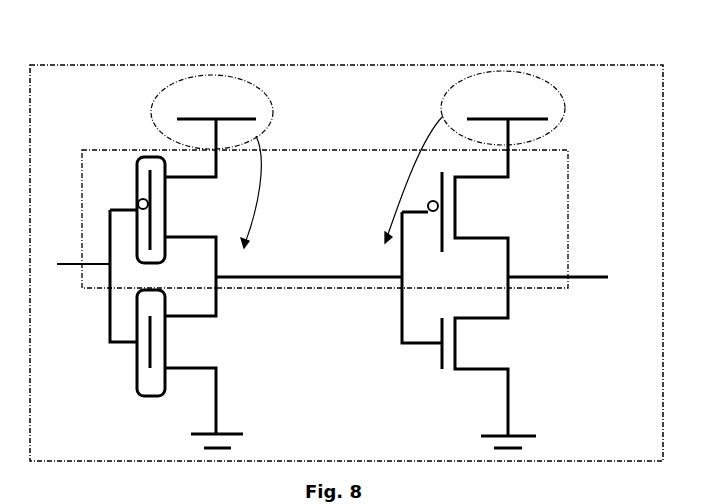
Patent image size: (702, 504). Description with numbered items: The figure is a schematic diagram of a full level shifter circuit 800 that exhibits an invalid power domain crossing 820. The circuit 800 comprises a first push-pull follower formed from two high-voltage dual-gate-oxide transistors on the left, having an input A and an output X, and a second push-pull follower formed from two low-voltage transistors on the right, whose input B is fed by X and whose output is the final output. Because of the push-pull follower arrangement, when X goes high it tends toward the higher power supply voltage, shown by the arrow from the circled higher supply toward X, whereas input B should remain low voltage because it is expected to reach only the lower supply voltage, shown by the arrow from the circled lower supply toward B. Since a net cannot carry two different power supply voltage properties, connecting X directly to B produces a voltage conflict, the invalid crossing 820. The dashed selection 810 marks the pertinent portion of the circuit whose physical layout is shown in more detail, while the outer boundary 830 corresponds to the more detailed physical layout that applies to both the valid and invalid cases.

The level shifter circuit 800 is at (606, 380).
The selection 810 is at (340, 150).
The invalid power domain crossing 820 is at (302, 277).
The physical layout 830 is at (557, 65).